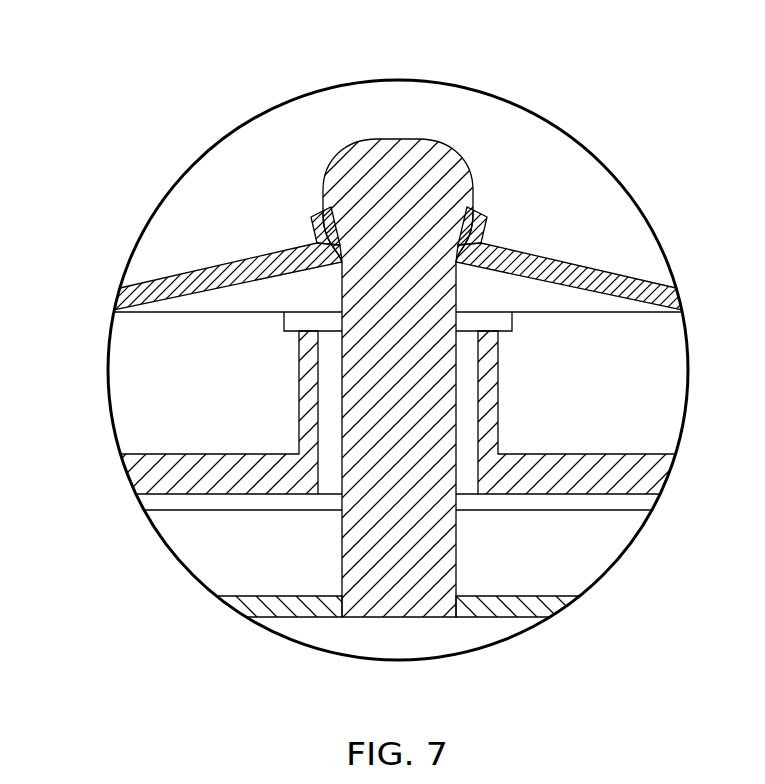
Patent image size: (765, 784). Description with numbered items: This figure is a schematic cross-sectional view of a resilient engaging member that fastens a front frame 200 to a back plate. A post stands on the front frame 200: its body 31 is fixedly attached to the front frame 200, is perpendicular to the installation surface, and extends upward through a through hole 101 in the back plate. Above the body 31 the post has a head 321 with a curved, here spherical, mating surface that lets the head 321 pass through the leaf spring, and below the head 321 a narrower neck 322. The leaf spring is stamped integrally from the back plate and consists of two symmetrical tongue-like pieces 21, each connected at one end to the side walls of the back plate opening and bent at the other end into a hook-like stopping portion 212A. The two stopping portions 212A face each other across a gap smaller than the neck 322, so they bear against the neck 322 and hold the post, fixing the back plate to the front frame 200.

The tongue-like piece 21 is at (641, 283).
The stopping portion 212A is at (478, 243).
The through hole 101 is at (328, 405).
The front frame 200 is at (258, 604).
The body 31 is at (357, 538).
The head 321 is at (397, 177).
The neck 322 is at (385, 222).